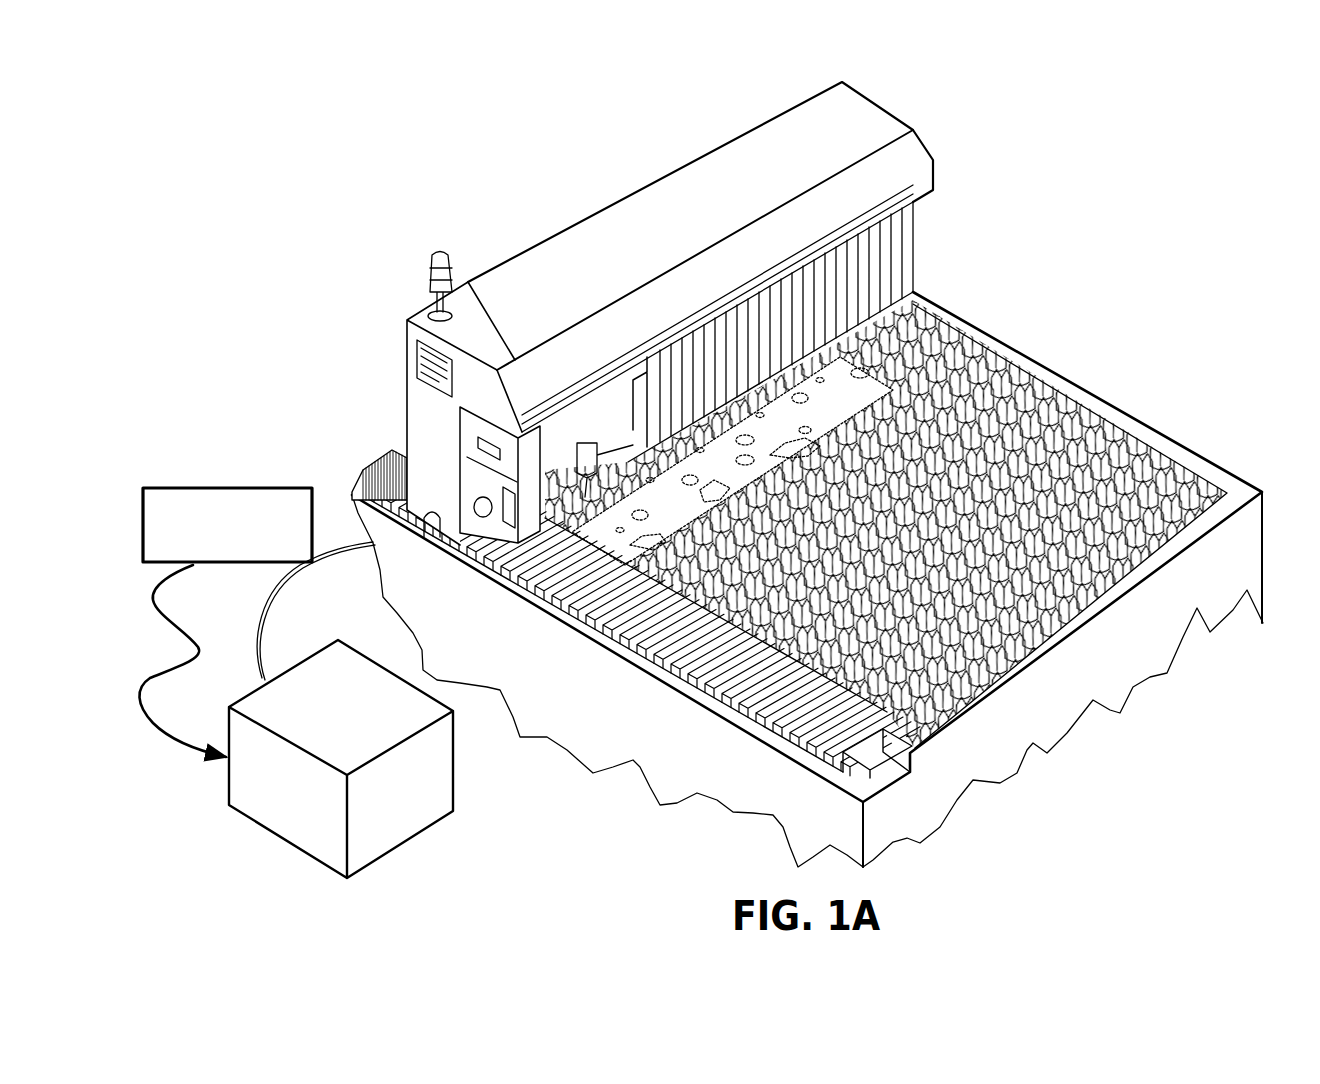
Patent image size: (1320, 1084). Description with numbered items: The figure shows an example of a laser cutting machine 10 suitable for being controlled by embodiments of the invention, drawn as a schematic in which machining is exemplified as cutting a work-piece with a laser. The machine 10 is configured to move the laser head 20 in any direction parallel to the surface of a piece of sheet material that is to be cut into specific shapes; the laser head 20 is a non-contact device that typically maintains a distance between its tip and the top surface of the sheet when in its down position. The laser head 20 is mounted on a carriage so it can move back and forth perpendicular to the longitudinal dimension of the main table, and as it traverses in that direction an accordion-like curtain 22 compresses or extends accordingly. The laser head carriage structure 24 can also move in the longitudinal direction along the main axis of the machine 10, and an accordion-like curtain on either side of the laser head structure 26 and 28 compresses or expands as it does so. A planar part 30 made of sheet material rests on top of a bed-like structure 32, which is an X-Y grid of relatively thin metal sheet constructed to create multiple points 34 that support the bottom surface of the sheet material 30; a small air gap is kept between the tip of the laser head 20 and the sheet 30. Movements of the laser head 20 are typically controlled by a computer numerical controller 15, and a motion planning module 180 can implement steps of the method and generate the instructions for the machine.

The laser cutting machine 10 is at (412, 152).
The laser head carriage structure 24 is at (918, 110).
The accordion-like curtain 22 is at (897, 262).
The laser head 20 is at (600, 462).
The planar part 30 is at (905, 345).
The points 34 is at (1037, 400).
The bed-like structure 32 is at (1118, 470).
The accordion-like curtain 26 is at (352, 450).
The accordion-like curtain 28 is at (692, 700).
The computer numerical controller 15 is at (326, 722).
The motion planning module 180 is at (172, 488).